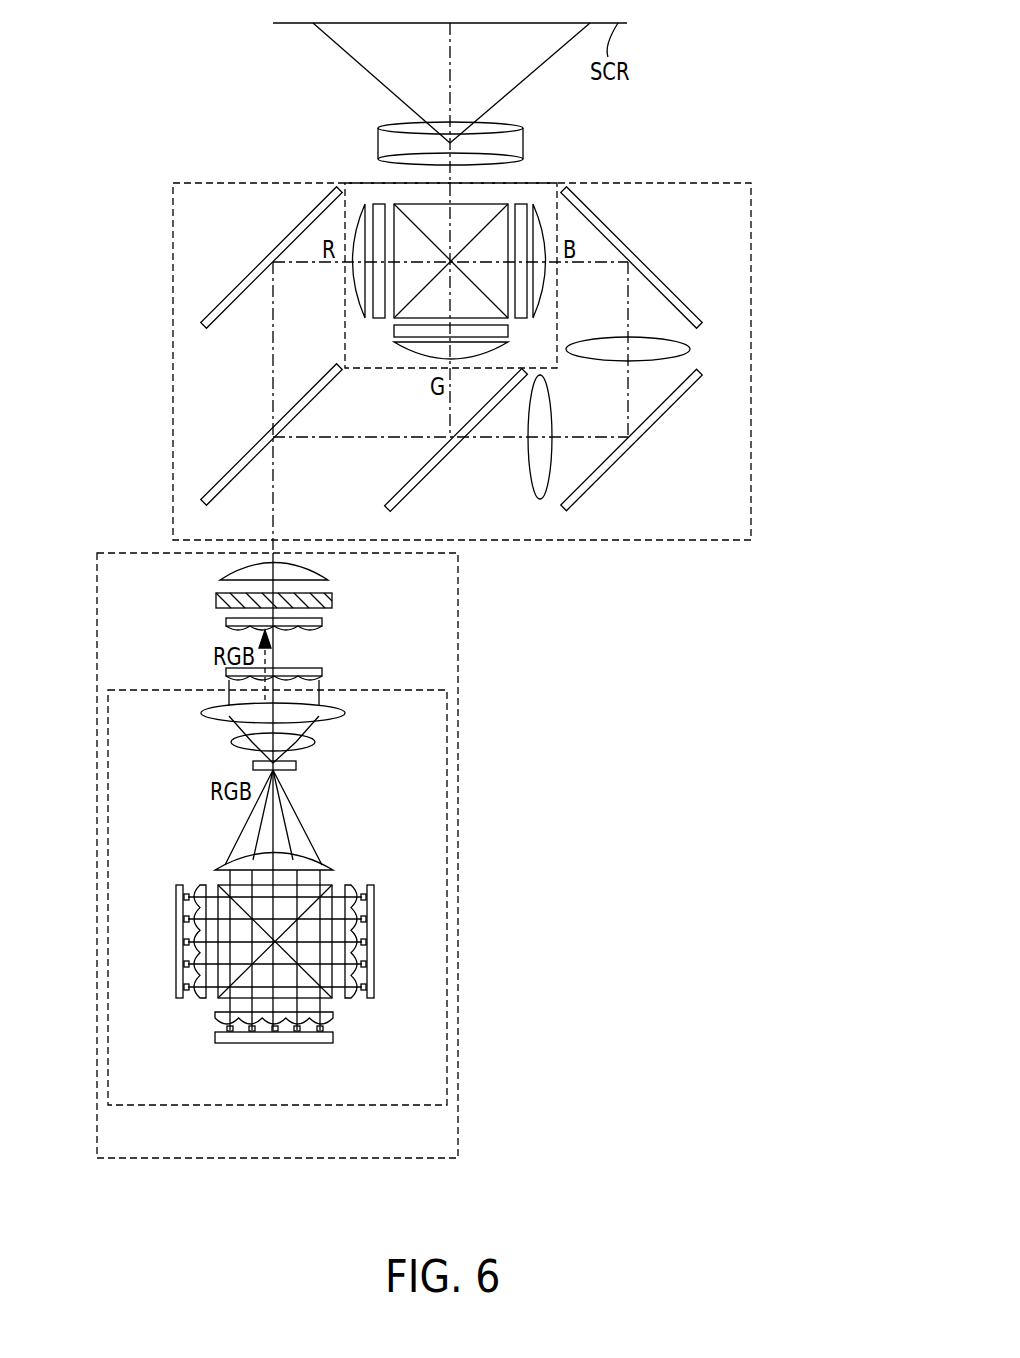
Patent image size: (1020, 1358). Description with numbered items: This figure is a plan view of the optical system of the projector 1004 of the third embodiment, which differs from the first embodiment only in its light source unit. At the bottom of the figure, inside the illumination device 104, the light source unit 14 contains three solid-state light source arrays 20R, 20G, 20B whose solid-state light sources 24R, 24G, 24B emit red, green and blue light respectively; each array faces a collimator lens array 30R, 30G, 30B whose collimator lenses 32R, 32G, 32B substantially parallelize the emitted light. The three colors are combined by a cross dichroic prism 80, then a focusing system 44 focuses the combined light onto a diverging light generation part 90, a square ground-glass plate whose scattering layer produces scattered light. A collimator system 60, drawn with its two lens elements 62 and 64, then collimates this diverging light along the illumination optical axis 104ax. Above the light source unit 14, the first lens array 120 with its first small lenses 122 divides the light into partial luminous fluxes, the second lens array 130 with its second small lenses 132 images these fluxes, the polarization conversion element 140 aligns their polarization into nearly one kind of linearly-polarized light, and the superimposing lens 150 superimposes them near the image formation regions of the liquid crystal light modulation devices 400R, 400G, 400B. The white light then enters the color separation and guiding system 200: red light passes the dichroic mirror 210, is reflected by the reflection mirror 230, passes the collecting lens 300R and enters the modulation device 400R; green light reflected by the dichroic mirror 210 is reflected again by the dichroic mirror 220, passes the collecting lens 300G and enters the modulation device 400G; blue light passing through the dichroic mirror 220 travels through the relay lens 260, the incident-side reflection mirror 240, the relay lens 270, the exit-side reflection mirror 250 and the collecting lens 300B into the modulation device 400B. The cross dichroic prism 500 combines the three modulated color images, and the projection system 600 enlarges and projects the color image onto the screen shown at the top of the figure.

The projector 1004 is at (805, 43).
The projection system 600 is at (378, 140).
The cross dichroic prism 500 is at (497, 204).
The collecting lens 300R is at (352, 204).
The liquid crystal light modulation device for red light 400R is at (379, 204).
The liquid crystal light modulation device for blue light 400B is at (523, 204).
The collecting lens 300B is at (546, 204).
The liquid crystal light modulation device for green light 400G is at (394, 331).
The collecting lens 300G is at (396, 360).
The color separation and guiding system 200 is at (173, 383).
The reflection mirror 230 is at (214, 318).
The dichroic mirror 210 is at (214, 495).
The dichroic mirror 220 is at (423, 503).
The reflection mirror at the exit side 250 is at (690, 310).
The reflection mirror at the incident side 240 is at (594, 500).
The relay lens 270 is at (690, 349).
The relay lens 260 is at (540, 499).
The illumination device 104 is at (368, 1160).
The illumination optical axis 104ax is at (273, 549).
The light source unit 14 is at (375, 1105).
The superimposing lens 150 is at (328, 577).
The polarization conversion element 140 is at (332, 600).
The second lens array 130 is at (322, 623).
The second small lens 132 is at (226, 626).
The first lens array 120 is at (322, 673).
The first small lens 122 is at (226, 680).
The collimator system 60 is at (158, 700).
The second lens 64 is at (215, 712).
The first lens 62 is at (232, 742).
The diverging light generation part 90 is at (296, 765).
The cross dichroic prism 80 is at (242, 884).
The focusing system 44 is at (335, 866).
The collimator lens array 30B is at (160, 939).
The collimator lens array 30R is at (390, 939).
The collimator lens array 30G is at (265, 1042).
The solid-state light source array 20B is at (160, 939).
The solid-state light source array 20R is at (390, 939).
The solid-state light source array 20G is at (265, 1054).
The solid-state light source 24B is at (180, 998).
The solid-state light source 24R is at (372, 998).
The solid-state light source 24G is at (222, 1040).
The collimator lens 32B is at (197, 1000).
The collimator lens 32R is at (354, 1000).
The collimator lens 32G is at (224, 1018).